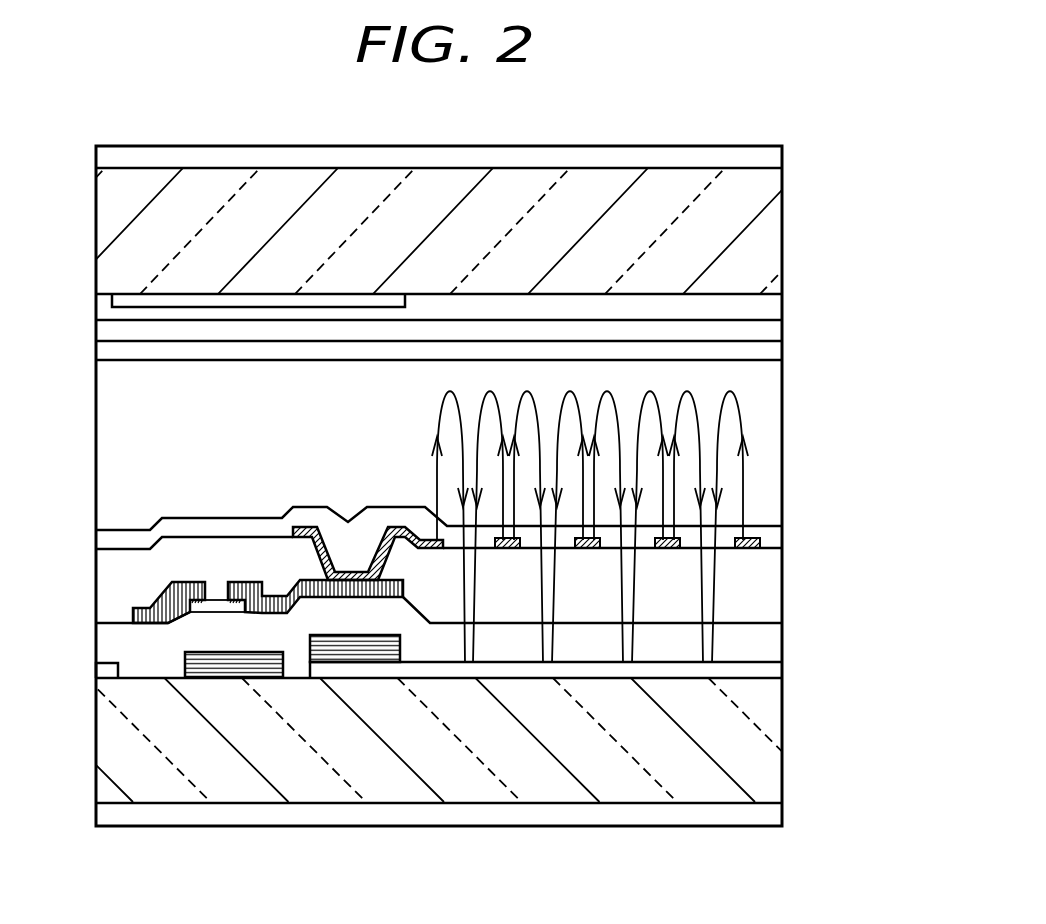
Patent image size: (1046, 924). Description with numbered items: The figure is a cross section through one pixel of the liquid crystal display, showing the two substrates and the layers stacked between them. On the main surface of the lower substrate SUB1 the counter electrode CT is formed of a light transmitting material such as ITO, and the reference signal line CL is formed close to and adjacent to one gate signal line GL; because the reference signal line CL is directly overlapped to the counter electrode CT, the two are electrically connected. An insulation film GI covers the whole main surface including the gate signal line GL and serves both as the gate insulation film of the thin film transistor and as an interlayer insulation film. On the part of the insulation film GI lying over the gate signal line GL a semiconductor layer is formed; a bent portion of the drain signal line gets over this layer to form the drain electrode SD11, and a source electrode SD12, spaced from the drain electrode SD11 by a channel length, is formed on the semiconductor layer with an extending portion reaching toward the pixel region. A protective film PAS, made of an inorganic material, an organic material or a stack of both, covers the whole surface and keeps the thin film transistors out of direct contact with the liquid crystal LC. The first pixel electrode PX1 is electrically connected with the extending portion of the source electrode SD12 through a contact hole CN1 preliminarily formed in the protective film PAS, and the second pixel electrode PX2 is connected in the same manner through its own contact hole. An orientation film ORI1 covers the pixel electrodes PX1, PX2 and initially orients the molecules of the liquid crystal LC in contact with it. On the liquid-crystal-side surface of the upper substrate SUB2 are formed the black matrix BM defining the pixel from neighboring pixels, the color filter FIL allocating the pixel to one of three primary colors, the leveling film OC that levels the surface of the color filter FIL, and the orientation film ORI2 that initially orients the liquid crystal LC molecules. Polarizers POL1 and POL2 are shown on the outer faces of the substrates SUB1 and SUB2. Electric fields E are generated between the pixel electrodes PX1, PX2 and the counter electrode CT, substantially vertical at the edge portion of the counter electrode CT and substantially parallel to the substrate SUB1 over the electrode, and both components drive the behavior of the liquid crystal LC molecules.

The upper polarizer POL2 is at (775, 160).
The substrate SUB2 is at (762, 236).
The color filter FIL is at (775, 307).
The black matrix BM is at (138, 300).
The leveling film OC is at (768, 330).
The orientation film ORI2 is at (772, 350).
The liquid crystal LC is at (772, 468).
The electric fields E is at (579, 524).
The orientation film ORI1 is at (770, 537).
The protective film PAS is at (772, 592).
The insulation film GI is at (770, 647).
The drain electrode SD11 is at (163, 600).
The source electrode SD12 is at (255, 582).
The contact hole CN1 is at (348, 520).
The first pixel electrode PX1 is at (747, 548).
The second pixel electrode PX2 is at (508, 548).
The gate signal line GL is at (211, 675).
The reference signal line CL is at (350, 660).
The counter electrode CT is at (432, 672).
The substrate SUB1 is at (768, 762).
The lower polarizer POL1 is at (770, 817).